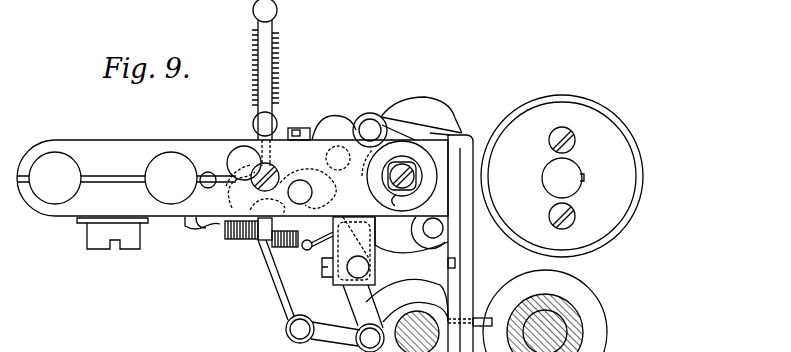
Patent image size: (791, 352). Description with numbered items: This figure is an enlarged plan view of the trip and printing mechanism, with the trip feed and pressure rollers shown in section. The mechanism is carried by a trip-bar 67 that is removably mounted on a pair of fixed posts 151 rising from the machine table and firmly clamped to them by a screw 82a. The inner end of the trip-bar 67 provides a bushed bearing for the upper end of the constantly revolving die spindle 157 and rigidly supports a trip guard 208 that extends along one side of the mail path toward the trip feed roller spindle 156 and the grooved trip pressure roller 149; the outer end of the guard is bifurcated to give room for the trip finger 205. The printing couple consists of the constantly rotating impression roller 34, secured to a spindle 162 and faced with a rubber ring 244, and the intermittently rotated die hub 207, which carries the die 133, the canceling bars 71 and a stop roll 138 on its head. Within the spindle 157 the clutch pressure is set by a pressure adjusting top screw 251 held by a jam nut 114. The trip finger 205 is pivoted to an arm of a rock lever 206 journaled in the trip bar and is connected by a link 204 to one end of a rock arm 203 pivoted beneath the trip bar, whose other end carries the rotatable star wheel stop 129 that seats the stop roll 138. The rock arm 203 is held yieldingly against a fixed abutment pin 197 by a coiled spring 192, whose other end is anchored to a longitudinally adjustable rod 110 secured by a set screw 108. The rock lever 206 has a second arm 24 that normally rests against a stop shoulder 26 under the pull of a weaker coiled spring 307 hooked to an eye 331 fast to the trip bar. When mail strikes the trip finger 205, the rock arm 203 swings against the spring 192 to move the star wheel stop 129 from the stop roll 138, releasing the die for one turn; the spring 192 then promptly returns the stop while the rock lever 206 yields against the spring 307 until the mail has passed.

The trip-bar 67 is at (195, 147).
The fixed posts 151 is at (42, 160).
The abutment pin 197 is at (228, 160).
The set screw 108 is at (281, 164).
The adjustable rod 110 is at (257, 23).
The coiled spring 192 is at (278, 66).
The star wheel stop 129 is at (312, 129).
The stop roll 138 is at (367, 112).
The die 133 is at (422, 94).
The die hub 207 is at (452, 133).
The die spindle 157 is at (420, 173).
The pressure adjusting top screw 251 is at (404, 159).
The jam nut 114 is at (390, 197).
The rock arm 203 is at (322, 209).
The second arm 24 is at (362, 228).
The stop shoulder 26 is at (334, 226).
The canceling bars 71 is at (408, 259).
The spindle 156 is at (415, 312).
The trip guard 208 is at (475, 258).
The trip finger 205 is at (487, 318).
The impression roller 34 is at (612, 128).
The spindle 162 is at (576, 170).
The rubber ring 244 is at (642, 155).
The trip pressure roller 149 is at (594, 307).
The link 204 is at (281, 283).
The rock lever 206 is at (357, 271).
The coiled spring 307 is at (228, 235).
The eye 331 is at (208, 230).
The screw 82a is at (95, 236).